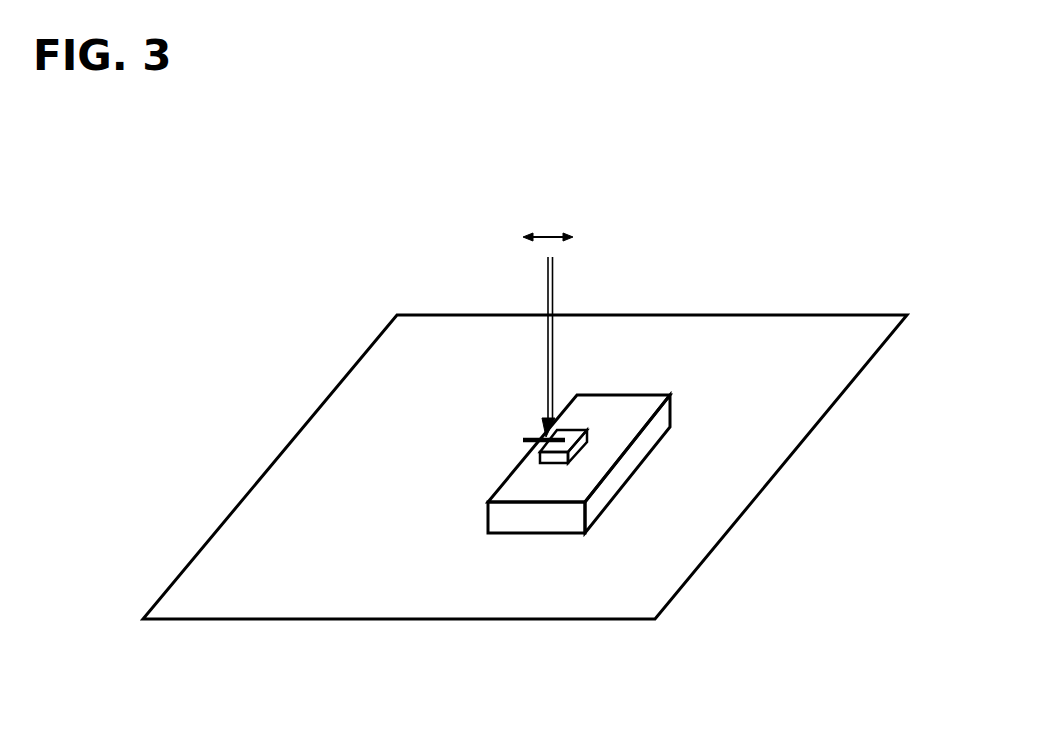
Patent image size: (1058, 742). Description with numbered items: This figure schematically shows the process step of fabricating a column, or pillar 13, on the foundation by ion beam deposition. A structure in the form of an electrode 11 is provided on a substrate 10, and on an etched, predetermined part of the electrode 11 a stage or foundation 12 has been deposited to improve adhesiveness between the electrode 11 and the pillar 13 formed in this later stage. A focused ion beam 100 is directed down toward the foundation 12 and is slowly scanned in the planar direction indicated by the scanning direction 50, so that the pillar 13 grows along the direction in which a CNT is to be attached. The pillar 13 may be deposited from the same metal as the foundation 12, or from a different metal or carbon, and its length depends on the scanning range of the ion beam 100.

The substrate 10 is at (820, 337).
The structure (electrode) 11 is at (598, 460).
The stage or foundation 12 is at (580, 423).
The pillar 13 is at (540, 438).
The ion beam 100 is at (552, 288).
The scanning direction 50 is at (550, 233).